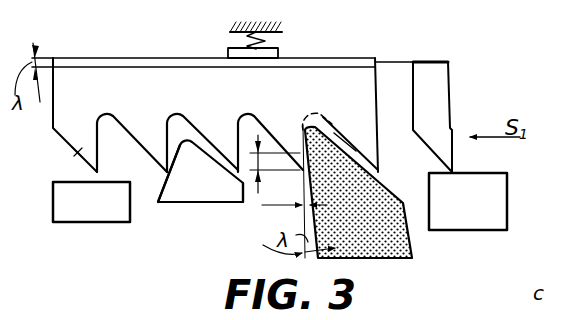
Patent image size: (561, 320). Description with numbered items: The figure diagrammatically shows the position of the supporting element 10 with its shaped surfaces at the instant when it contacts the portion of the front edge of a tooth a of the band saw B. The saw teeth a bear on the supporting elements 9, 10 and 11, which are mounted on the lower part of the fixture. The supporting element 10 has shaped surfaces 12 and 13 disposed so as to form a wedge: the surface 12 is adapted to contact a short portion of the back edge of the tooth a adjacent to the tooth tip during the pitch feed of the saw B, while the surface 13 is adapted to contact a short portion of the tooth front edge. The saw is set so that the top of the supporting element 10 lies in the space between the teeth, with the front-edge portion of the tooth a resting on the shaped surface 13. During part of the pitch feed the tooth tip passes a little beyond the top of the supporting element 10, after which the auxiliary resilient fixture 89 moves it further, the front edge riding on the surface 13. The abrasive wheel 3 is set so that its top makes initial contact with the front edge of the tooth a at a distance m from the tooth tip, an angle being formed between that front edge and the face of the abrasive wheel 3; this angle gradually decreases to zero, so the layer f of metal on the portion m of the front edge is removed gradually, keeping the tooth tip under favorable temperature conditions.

The auxiliary resilient fixture 89 is at (280, 57).
The band saw B is at (442, 107).
The supporting element 9 is at (488, 213).
The abrasive wheel 3 is at (412, 258).
The supporting element 11 is at (102, 215).
The tooth a is at (77, 152).
The supporting element 10 is at (202, 197).
The shaped surface 13 is at (160, 205).
The shaped surface 12 is at (243, 195).
The distance from tooth tip m is at (268, 150).
The layer of metal f is at (300, 203).